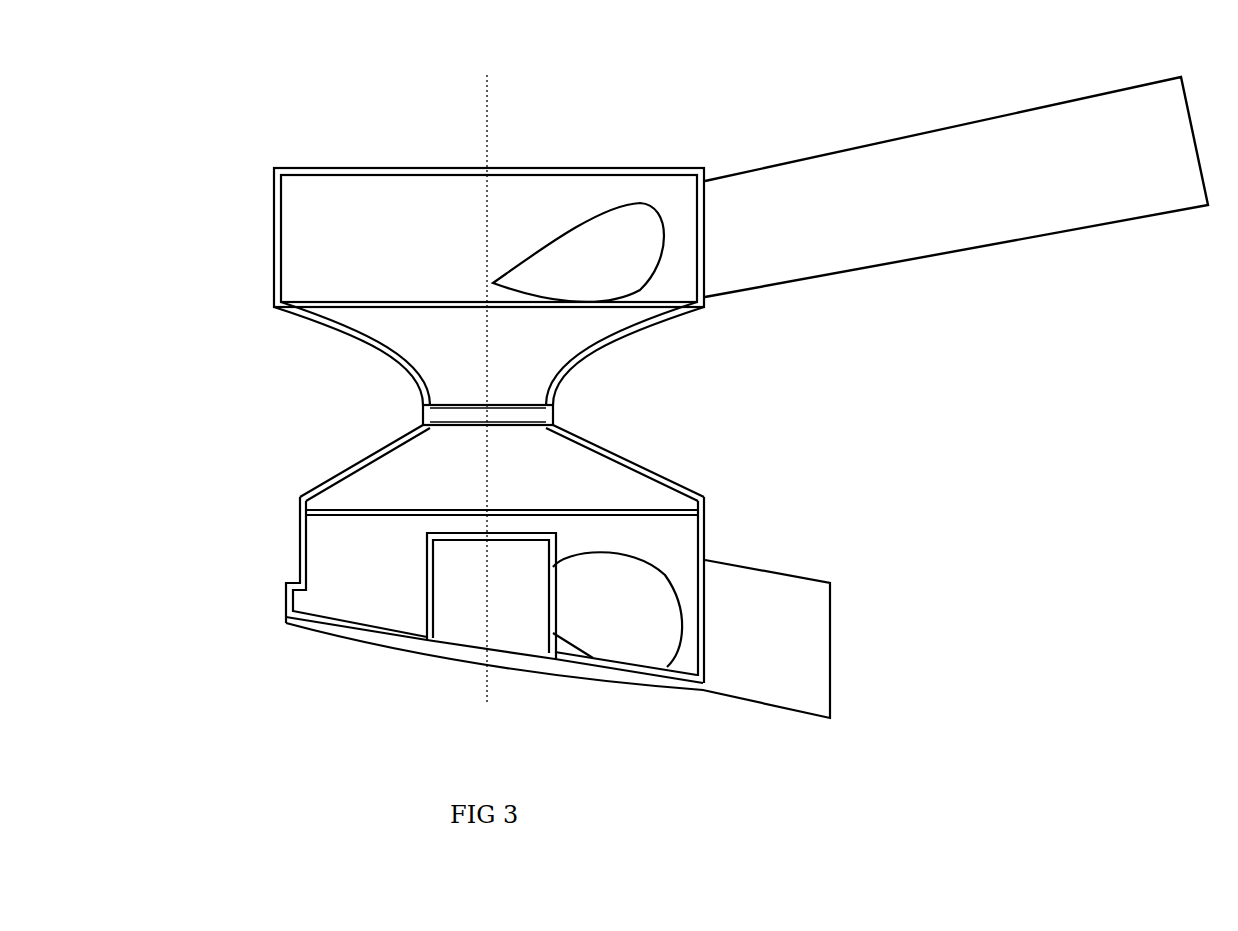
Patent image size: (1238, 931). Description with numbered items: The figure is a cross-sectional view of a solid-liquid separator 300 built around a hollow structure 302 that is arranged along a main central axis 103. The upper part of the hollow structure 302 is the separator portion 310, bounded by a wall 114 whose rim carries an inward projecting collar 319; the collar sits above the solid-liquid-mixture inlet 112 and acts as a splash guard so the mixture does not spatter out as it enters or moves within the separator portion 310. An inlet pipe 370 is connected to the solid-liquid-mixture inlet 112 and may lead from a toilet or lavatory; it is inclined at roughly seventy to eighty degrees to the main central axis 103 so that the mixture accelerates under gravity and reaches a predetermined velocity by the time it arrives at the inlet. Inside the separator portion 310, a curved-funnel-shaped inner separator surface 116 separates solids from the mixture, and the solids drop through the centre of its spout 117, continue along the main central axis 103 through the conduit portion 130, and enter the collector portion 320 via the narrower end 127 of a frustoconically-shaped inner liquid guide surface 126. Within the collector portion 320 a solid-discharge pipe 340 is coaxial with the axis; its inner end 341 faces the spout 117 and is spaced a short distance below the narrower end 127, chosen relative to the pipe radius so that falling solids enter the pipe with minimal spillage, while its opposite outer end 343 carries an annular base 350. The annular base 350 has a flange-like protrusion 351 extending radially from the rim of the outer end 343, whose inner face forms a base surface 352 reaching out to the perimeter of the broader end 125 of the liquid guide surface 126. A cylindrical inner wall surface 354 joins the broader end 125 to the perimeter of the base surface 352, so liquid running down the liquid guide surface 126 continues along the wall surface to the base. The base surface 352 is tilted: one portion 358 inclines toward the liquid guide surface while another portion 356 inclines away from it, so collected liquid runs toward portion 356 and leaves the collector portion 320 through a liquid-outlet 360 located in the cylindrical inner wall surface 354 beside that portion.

The main central axis 103 is at (493, 82).
The solid-liquid separator 300 is at (724, 112).
The hollow structure 302 is at (407, 304).
The separator portion 310 is at (146, 285).
The inward projecting collar 319 is at (302, 167).
The wall 114 is at (283, 236).
The solid-liquid-mixture inlet 112 is at (547, 254).
The curved-funnel-shaped inner separator surface 116 is at (413, 358).
The spout 117 is at (490, 398).
The conduit portion 130 is at (533, 386).
The narrower end 127 is at (470, 430).
The frustoconically-shaped inner liquid guide surface 126 is at (376, 460).
The broader end 125 is at (515, 510).
The collector portion 320 is at (146, 566).
The annular base 350 is at (470, 594).
The inner end 341 is at (426, 533).
The solid-discharge pipe 340 is at (426, 565).
The cylindrical inner wall surface 354 is at (696, 533).
The base surface 352 is at (366, 623).
The liquid-outlet 360 is at (644, 625).
The portion of the base surface inclined towards the liquid guide surface 358 is at (333, 632).
The flange-like protrusion 351 is at (392, 650).
The outer end 343 is at (417, 653).
The portion of the base surface inclined away from the liquid guide surface 356 is at (632, 673).
The inlet pipe 370 is at (880, 269).